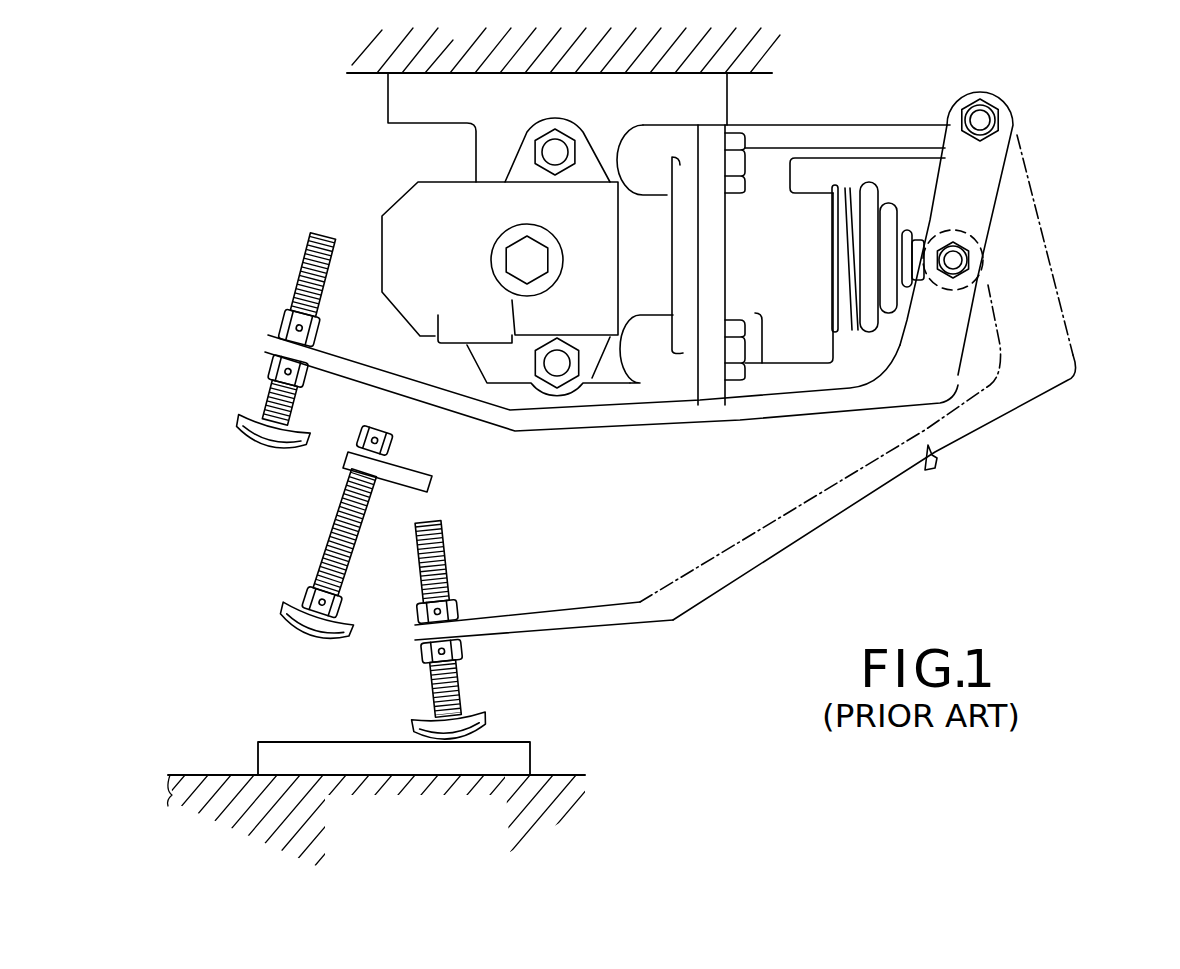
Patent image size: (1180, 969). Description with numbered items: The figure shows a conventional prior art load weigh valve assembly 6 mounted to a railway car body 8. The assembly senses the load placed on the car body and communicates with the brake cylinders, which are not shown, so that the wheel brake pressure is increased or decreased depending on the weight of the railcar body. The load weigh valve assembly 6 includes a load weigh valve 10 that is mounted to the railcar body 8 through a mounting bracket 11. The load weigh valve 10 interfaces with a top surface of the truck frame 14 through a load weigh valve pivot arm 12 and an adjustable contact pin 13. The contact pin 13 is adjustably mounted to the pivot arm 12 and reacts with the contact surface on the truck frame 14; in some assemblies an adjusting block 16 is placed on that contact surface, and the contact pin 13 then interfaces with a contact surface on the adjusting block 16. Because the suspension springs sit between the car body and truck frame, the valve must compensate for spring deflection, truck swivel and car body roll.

The load weigh valve assembly 6 is at (1043, 175).
The railway car body 8 is at (750, 53).
The load weigh valve 10 is at (812, 355).
The mounting bracket 11 is at (477, 100).
The load weigh valve pivot arm 12 is at (940, 380).
The adjustable contact pin 13 is at (260, 383).
The truck frame 14 is at (550, 807).
The adjusting block 16 is at (518, 742).